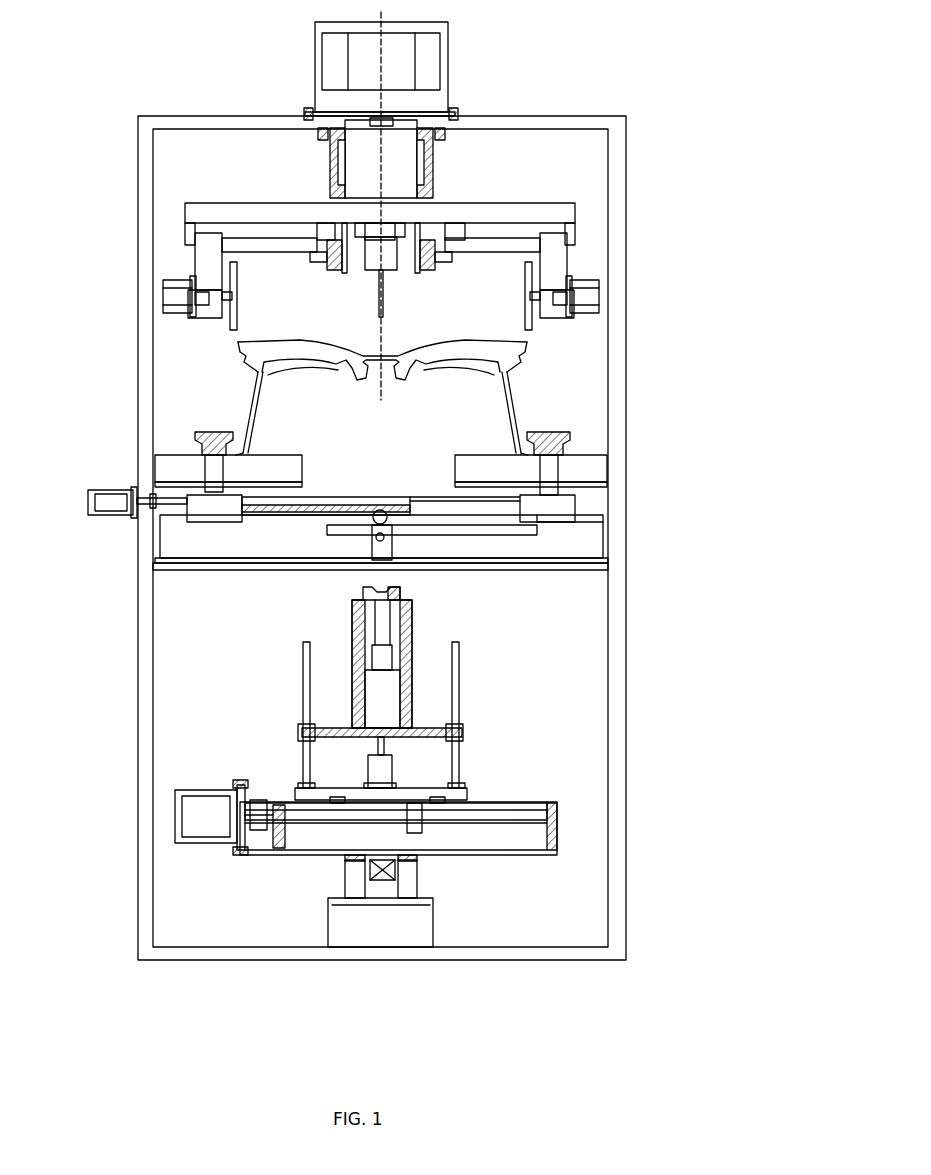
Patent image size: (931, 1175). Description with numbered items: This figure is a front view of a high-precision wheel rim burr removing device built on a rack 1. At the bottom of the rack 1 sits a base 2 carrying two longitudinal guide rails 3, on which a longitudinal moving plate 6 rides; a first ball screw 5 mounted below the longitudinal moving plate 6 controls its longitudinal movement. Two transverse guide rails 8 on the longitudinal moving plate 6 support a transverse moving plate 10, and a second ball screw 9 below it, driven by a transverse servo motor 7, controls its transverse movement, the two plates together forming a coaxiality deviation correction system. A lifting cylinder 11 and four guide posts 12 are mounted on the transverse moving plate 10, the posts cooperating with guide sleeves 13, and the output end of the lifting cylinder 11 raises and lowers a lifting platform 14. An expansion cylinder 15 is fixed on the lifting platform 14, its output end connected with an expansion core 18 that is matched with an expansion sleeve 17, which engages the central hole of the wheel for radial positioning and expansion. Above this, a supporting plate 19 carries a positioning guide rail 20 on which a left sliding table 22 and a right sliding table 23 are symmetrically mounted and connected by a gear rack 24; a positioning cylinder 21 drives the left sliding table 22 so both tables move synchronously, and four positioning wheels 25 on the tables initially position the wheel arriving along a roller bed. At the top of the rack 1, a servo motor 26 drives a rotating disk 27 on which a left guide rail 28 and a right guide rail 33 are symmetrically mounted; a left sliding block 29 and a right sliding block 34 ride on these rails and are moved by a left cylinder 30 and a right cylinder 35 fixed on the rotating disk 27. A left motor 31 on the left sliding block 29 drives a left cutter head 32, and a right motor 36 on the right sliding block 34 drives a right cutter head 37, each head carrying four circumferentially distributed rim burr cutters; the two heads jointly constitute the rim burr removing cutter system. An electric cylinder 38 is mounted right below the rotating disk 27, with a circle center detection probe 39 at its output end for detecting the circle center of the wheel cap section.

The rack 1 is at (305, 955).
The base 2 is at (340, 922).
The longitudinal guide rails 3 is at (347, 890).
The first ball screw 5 is at (388, 874).
The longitudinal moving plate 6 is at (468, 853).
The transverse servo motor 7 is at (213, 790).
The transverse guide rails 8 is at (292, 803).
The second ball screw 9 is at (497, 812).
The transverse moving plate 10 is at (463, 793).
The lifting cylinder 11 is at (377, 780).
The guide posts 12 is at (303, 780).
The guide sleeves 13 is at (330, 732).
The lifting platform 14 is at (305, 728).
The expansion cylinder 15 is at (355, 655).
The expansion sleeve 17 is at (363, 594).
The expansion core 18 is at (400, 594).
The supporting plate 19 is at (602, 568).
The positioning guide rail 20 is at (598, 543).
The positioning cylinder 21 is at (90, 498).
The left sliding table 22 is at (190, 505).
The right sliding table 23 is at (572, 503).
The gear rack 24 is at (378, 510).
The positioning wheels 25 is at (213, 440).
The servo motor 26 is at (325, 60).
The rotating disk 27 is at (277, 212).
The left guide rail 28 is at (190, 232).
The left sliding block 29 is at (200, 262).
The left cylinder 30 is at (325, 265).
The left motor 31 is at (170, 293).
The left cutter head 32 is at (272, 301).
The right guide rail 33 is at (575, 228).
The right sliding block 34 is at (560, 262).
The right cylinder 35 is at (435, 265).
The right motor 36 is at (596, 294).
The right cutter head 37 is at (526, 310).
The electric cylinder 38 is at (378, 275).
The circle center detection probe 39 is at (380, 310).